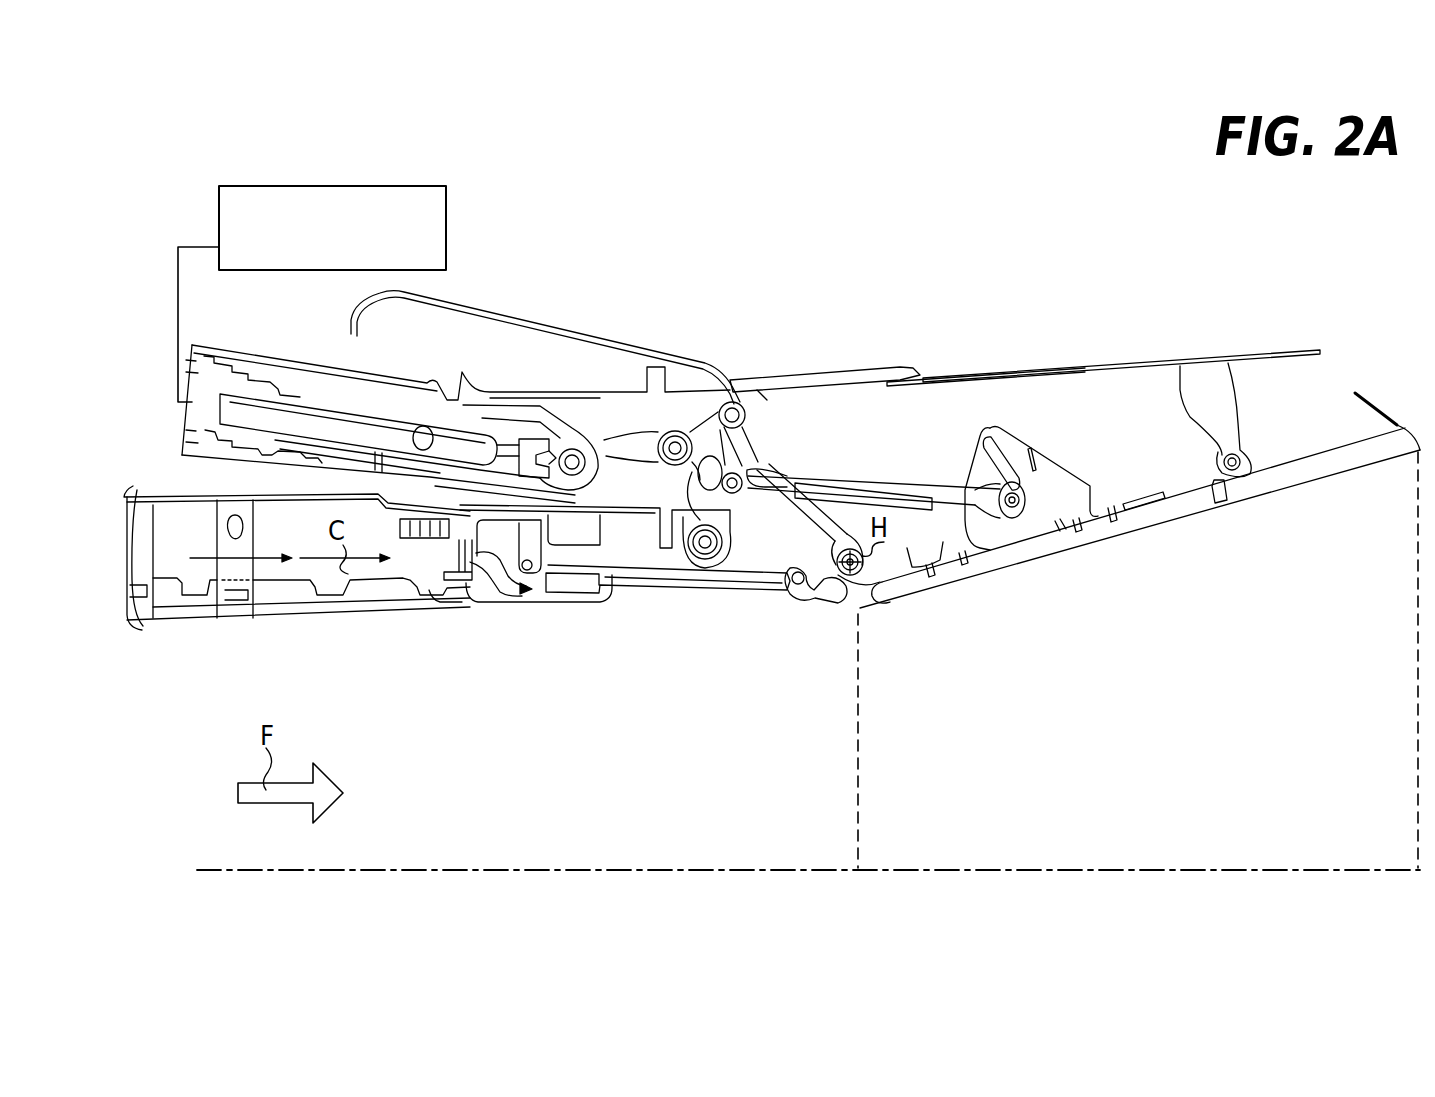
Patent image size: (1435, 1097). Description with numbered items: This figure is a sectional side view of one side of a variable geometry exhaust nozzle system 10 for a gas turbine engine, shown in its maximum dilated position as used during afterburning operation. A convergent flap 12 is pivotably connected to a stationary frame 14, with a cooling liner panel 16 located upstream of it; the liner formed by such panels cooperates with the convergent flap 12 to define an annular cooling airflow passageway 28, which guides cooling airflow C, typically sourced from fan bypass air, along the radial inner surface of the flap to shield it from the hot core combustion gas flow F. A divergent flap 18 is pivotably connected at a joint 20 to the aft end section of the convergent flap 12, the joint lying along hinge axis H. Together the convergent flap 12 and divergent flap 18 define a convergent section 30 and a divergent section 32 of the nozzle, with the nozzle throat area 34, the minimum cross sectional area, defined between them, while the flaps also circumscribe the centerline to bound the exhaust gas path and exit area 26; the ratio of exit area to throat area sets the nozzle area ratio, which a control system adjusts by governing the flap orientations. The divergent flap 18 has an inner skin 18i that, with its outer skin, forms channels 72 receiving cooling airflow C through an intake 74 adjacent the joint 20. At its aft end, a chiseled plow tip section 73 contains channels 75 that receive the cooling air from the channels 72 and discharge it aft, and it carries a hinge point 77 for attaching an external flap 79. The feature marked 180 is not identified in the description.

The nozzle system 10 is at (1028, 246).
The convergent flap 12 is at (690, 590).
The stationary frame 14 is at (567, 510).
The cooling liner panel 16 is at (462, 603).
The divergent flap 18 is at (1092, 540).
The inner skin 18i is at (1184, 518).
The joint 20 is at (850, 618).
The exhaust gas path / nozzle exit area 26 is at (1416, 662).
The annular cooling airflow passageway 28 is at (296, 540).
The convergent section 30 is at (616, 745).
The divergent section 32 is at (1116, 724).
The nozzle throat area 34 is at (860, 772).
The channel 72 is at (1002, 558).
The plow tip section 73 is at (1306, 492).
The intake 74 is at (806, 602).
The channel 75 is at (1412, 438).
The hinge point 77 is at (1242, 462).
The external flap 79 is at (1135, 370).
The seal 180 is at (1186, 500).